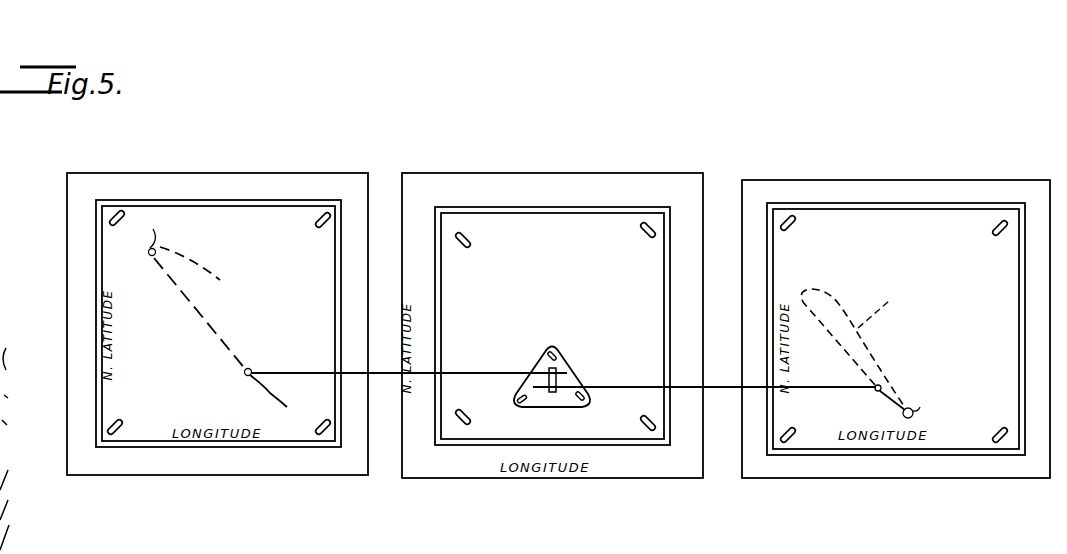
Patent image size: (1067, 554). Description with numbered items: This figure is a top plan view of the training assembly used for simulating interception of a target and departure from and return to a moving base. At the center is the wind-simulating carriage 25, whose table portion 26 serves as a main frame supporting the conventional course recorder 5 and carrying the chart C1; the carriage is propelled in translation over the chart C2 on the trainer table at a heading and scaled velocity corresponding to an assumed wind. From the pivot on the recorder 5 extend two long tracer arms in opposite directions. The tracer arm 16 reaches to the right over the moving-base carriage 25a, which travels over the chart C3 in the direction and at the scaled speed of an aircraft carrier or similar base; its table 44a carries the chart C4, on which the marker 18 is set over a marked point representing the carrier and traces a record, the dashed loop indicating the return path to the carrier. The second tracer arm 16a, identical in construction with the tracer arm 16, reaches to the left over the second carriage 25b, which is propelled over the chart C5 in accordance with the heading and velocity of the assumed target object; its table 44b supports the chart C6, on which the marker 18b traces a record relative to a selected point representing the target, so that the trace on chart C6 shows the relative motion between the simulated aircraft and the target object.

The chart C5 is at (145, 181).
The second carriage 25b is at (229, 178).
The table 44b is at (299, 200).
The chart C6 is at (242, 213).
The marker 18b is at (250, 368).
The chart C2 is at (503, 189).
The wind-simulating carriage 25 is at (528, 190).
The table portion 26 is at (565, 207).
The chart C1 is at (613, 226).
The second tracer arm 16a is at (462, 373).
The tracer arm 16 is at (618, 388).
The recorder 5 is at (548, 404).
The chart C3 is at (783, 191).
The second carriage 25a is at (808, 193).
The table 44a is at (898, 205).
The chart C4 is at (982, 223).
The marker 18 is at (877, 391).